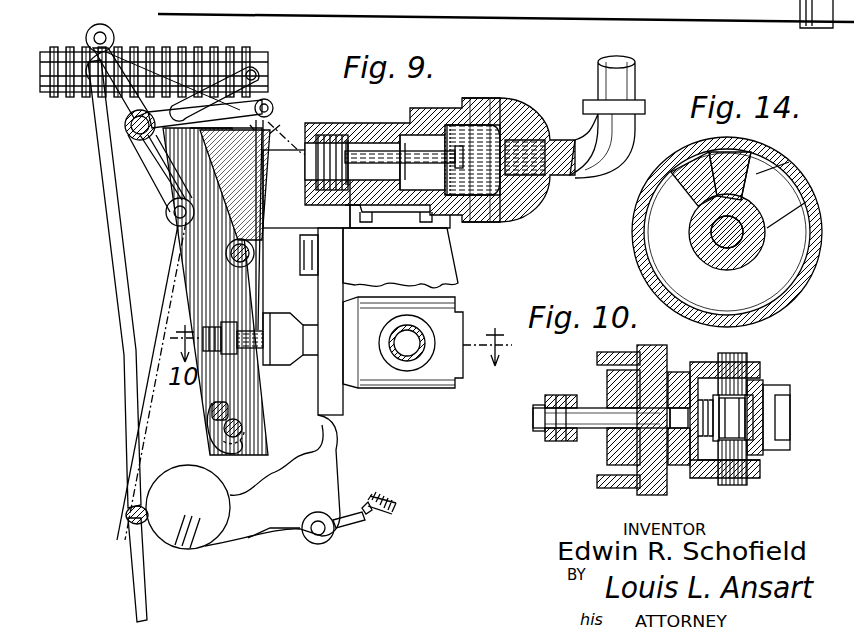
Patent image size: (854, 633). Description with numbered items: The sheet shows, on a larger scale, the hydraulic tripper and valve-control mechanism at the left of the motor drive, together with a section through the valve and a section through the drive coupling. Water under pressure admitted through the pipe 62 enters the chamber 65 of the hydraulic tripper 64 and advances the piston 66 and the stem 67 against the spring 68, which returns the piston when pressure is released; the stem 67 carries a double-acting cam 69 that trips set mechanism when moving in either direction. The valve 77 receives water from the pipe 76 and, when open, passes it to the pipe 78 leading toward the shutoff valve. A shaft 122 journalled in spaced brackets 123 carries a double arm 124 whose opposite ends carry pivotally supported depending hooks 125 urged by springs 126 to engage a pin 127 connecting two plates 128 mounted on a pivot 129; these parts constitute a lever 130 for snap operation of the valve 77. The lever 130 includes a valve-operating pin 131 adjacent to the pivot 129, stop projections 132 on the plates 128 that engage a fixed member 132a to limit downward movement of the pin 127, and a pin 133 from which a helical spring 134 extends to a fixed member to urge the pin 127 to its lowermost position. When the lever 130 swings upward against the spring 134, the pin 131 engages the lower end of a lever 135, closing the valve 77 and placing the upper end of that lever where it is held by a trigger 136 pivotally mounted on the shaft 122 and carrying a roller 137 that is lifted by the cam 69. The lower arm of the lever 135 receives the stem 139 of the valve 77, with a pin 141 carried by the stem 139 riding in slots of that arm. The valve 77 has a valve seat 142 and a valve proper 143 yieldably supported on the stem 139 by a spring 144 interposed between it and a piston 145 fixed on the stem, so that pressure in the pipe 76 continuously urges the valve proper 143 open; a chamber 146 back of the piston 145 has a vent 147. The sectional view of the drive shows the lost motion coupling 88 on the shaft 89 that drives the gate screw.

In FIG. 9, the pipe 62 is at (636, 76).
In FIG. 9, the hydraulic tripper 64 is at (528, 104).
In FIG. 9, the chamber 65 is at (481, 145).
In FIG. 9, the piston 66 is at (432, 120).
In FIG. 9, the stem 67 is at (368, 145).
In FIG. 9, the spring 68 is at (330, 133).
In FIG. 9, the double-acting cam 69 is at (162, 170).
In FIG. 9, the pipe 76 is at (410, 365).
In FIG. 10, the pipe 76 is at (752, 484).
In FIG. 9, the valve 77 is at (436, 385).
In FIG. 10, the valve 77 is at (699, 364).
In FIG. 10, the pipe 78 is at (752, 364).
In FIG. 14, the lost motion coupling 88 is at (757, 202).
In FIG. 14, the shaft 89 is at (724, 252).
In FIG. 9, the shaft 122 is at (127, 131).
In FIG. 9, the brackets 123 is at (182, 178).
In FIG. 9, the double arm 124 is at (100, 106).
In FIG. 9, the hooks 125 is at (126, 300).
In FIG. 9, the springs 126 is at (78, 38).
In FIG. 9, the pin 127 is at (142, 505).
In FIG. 9, the plates 128 is at (216, 327).
In FIG. 9, the pivot 129 is at (244, 428).
In FIG. 9, the lever 130 is at (247, 544).
In FIG. 9, the valve-operating pin 131 is at (232, 452).
In FIG. 9, the stop projections 132 is at (325, 448).
In FIG. 9, the fixed member 132a is at (348, 412).
In FIG. 9, the pin 133 is at (312, 540).
In FIG. 9, the helical spring 134 is at (376, 516).
In FIG. 9, the lever 135 is at (263, 199).
In FIG. 10, the lever 135 is at (540, 400).
In FIG. 9, the trigger 136 is at (262, 83).
In FIG. 9, the roller 137 is at (274, 108).
In FIG. 9, the stem 139 is at (214, 340).
In FIG. 10, the stem 139 is at (590, 428).
In FIG. 9, the pin 141 is at (226, 325).
In FIG. 10, the pin 141 is at (556, 440).
In FIG. 10, the valve seat 142 is at (720, 482).
In FIG. 10, the valve proper 143 is at (740, 410).
In FIG. 10, the spring 144 is at (705, 395).
In FIG. 10, the piston 145 is at (698, 462).
In FIG. 9, the chamber 146 is at (230, 360).
In FIG. 10, the chamber 146 is at (650, 470).
In FIG. 10, the vent 147 is at (674, 372).